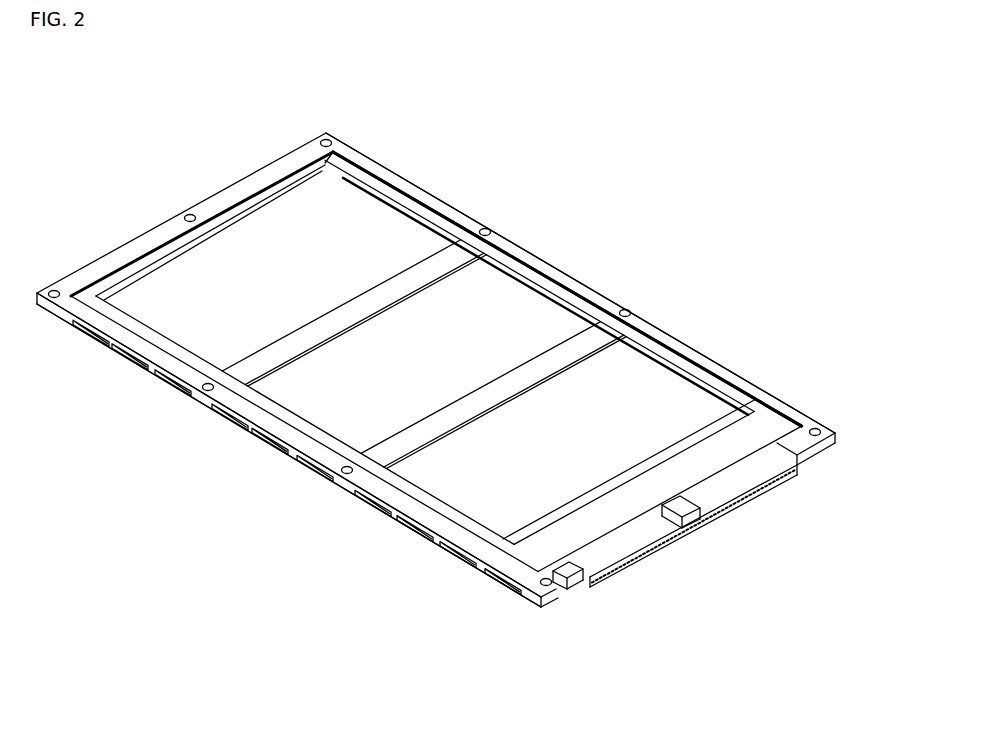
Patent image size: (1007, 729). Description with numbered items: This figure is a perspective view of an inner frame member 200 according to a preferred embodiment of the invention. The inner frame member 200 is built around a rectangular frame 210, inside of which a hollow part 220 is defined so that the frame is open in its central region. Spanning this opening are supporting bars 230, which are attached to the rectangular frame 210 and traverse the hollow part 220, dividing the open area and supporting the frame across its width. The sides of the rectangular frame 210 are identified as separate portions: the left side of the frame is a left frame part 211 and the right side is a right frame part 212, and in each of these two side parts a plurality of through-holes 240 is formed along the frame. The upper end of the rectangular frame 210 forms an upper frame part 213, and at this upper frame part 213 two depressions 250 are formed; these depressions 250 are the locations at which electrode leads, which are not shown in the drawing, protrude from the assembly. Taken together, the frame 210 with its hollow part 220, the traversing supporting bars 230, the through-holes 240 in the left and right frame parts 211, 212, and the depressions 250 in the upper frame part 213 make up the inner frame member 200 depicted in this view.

The inner frame member 200 is at (71, 101).
The rectangular frame 210 is at (696, 331).
The left frame part 211 is at (427, 522).
The right frame part 212 is at (760, 393).
The upper frame part 213 is at (563, 573).
The hollow part 220 is at (594, 382).
The supporting bars 230 is at (413, 273).
The through-holes 240 is at (338, 470).
The depressions 250 is at (727, 490).